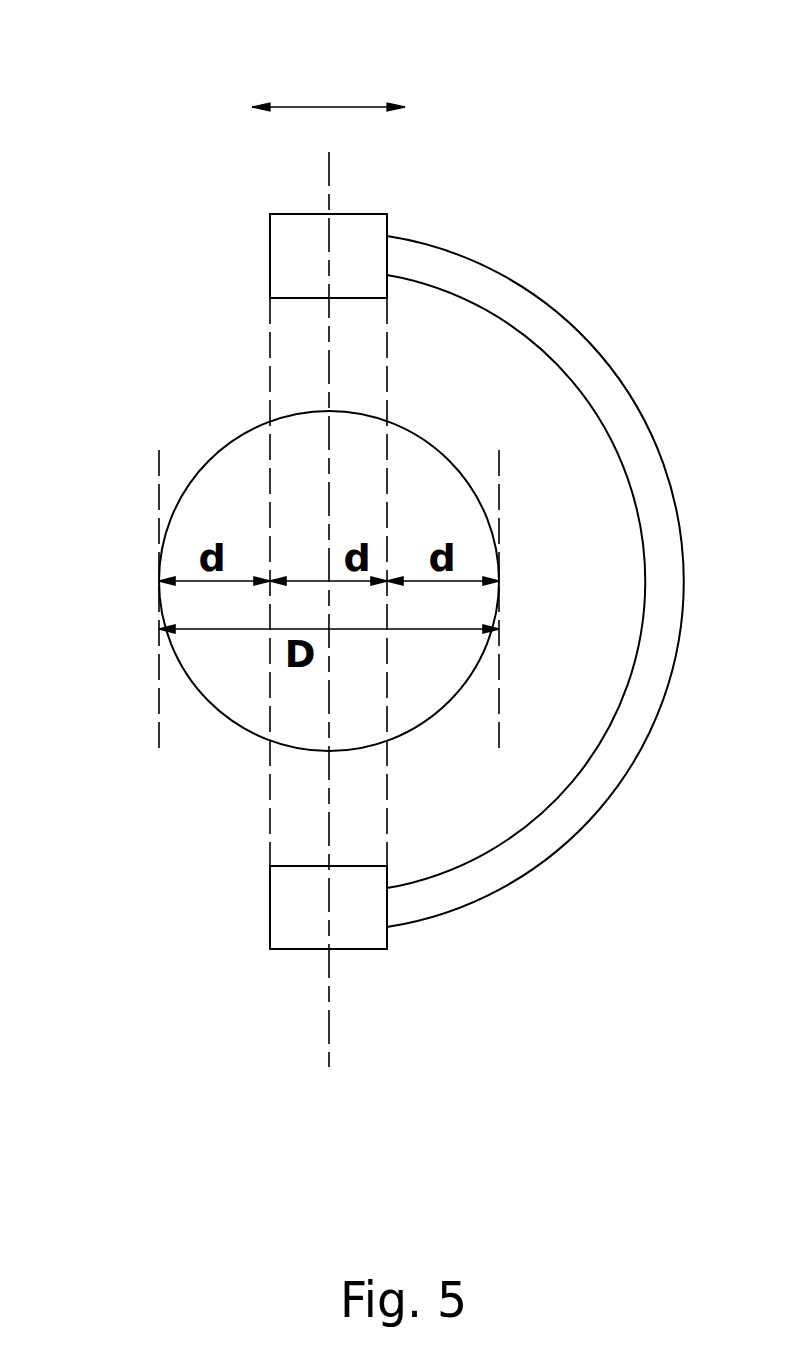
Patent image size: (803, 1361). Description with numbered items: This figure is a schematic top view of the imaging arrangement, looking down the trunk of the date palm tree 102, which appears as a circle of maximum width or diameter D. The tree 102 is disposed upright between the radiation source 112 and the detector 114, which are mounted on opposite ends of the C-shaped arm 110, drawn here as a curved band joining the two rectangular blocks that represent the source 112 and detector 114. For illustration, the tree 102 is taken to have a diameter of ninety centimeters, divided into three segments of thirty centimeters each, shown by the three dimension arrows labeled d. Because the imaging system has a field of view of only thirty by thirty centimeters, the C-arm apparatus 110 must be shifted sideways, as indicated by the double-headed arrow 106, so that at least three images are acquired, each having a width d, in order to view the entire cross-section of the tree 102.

The date palm tree 102 is at (213, 453).
The arrow 106 is at (329, 107).
The C-shaped arm 110 is at (570, 325).
The radiation source 112 is at (360, 952).
The detector 114 is at (368, 243).